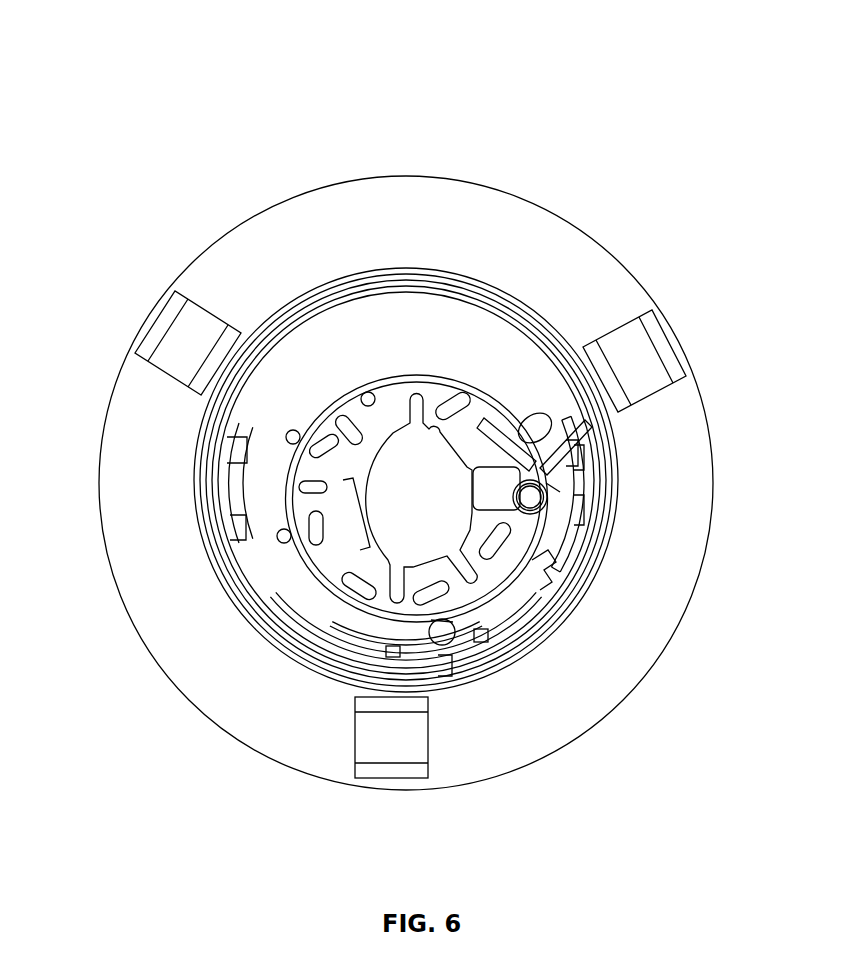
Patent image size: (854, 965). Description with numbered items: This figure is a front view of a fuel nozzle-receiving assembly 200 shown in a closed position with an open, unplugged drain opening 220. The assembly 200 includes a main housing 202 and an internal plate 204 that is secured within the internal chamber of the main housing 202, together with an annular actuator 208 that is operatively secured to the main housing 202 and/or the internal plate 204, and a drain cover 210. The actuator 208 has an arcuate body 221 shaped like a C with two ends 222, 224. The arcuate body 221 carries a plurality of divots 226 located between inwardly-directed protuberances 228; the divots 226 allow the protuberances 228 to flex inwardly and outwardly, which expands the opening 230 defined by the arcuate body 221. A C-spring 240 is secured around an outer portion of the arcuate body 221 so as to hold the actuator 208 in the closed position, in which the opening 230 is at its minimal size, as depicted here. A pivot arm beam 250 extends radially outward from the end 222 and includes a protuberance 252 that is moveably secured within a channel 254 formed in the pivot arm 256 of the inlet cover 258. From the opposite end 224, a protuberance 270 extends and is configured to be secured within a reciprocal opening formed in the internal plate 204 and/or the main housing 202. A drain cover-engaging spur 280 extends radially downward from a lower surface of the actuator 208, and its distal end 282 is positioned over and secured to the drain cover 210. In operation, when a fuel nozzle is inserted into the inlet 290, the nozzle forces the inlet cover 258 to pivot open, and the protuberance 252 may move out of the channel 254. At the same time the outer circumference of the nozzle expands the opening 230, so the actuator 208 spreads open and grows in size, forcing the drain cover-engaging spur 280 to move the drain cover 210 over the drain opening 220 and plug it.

The fuel nozzle-receiving assembly 200 is at (207, 154).
The main housing 202 is at (543, 190).
The internal plate 204 is at (375, 456).
The annular actuator 208 is at (400, 395).
The drain cover 210 is at (575, 722).
The drain opening 220 is at (525, 760).
The arcuate body 221 is at (512, 538).
The end 222 is at (616, 339).
The end 224 is at (703, 411).
The divots 226 is at (430, 383).
The inwardly-directed protuberances 228 is at (249, 549).
The opening 230 is at (314, 372).
The C-spring 240 is at (285, 733).
The pivot arm beam 250 is at (645, 395).
The protuberance 252 is at (685, 397).
The channel 254 is at (695, 442).
The pivot arm 256 is at (649, 342).
The inlet cover 258 is at (231, 603).
The protuberance 270 is at (667, 473).
The drain cover-engaging spur 280 is at (665, 566).
The distal end 282 is at (361, 737).
The inlet 290 is at (214, 585).